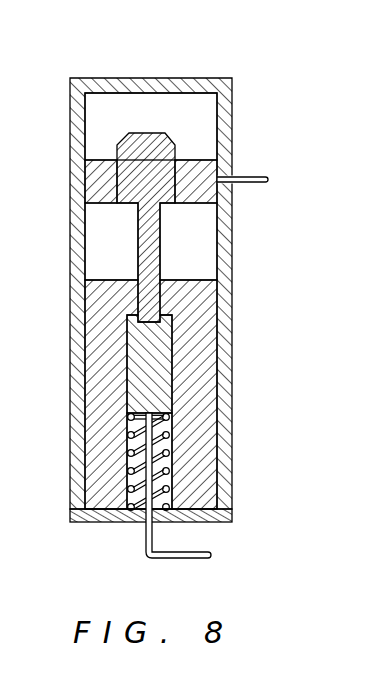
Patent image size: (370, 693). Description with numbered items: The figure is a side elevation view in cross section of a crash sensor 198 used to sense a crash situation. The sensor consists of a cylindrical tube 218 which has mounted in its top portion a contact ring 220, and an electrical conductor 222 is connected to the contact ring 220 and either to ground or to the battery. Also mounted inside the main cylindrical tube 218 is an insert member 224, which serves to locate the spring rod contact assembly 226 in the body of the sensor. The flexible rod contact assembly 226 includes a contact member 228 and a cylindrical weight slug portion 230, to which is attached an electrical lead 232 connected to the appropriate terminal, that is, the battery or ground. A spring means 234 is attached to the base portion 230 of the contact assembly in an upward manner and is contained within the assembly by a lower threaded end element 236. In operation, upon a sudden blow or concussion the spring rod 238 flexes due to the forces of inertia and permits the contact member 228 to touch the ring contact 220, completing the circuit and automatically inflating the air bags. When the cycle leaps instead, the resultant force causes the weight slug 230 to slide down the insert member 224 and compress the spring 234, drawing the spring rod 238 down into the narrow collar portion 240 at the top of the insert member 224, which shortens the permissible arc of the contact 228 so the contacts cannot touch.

The crash sensor 198 is at (252, 81).
The cylindrical tube 218 is at (236, 125).
The contact ring 220 is at (195, 159).
The electrical conductor 222 is at (256, 173).
The insert member 224 is at (212, 333).
The spring rod contact assembly 226 is at (183, 232).
The contact member 228 is at (147, 132).
The cylindrical weight slug portion 230 is at (127, 357).
The electrical lead 232 is at (203, 548).
The spring means 234 is at (163, 456).
The lower threaded end element 236 is at (118, 521).
The spring rod 238 is at (138, 256).
The narrow collar portion 240 is at (183, 268).